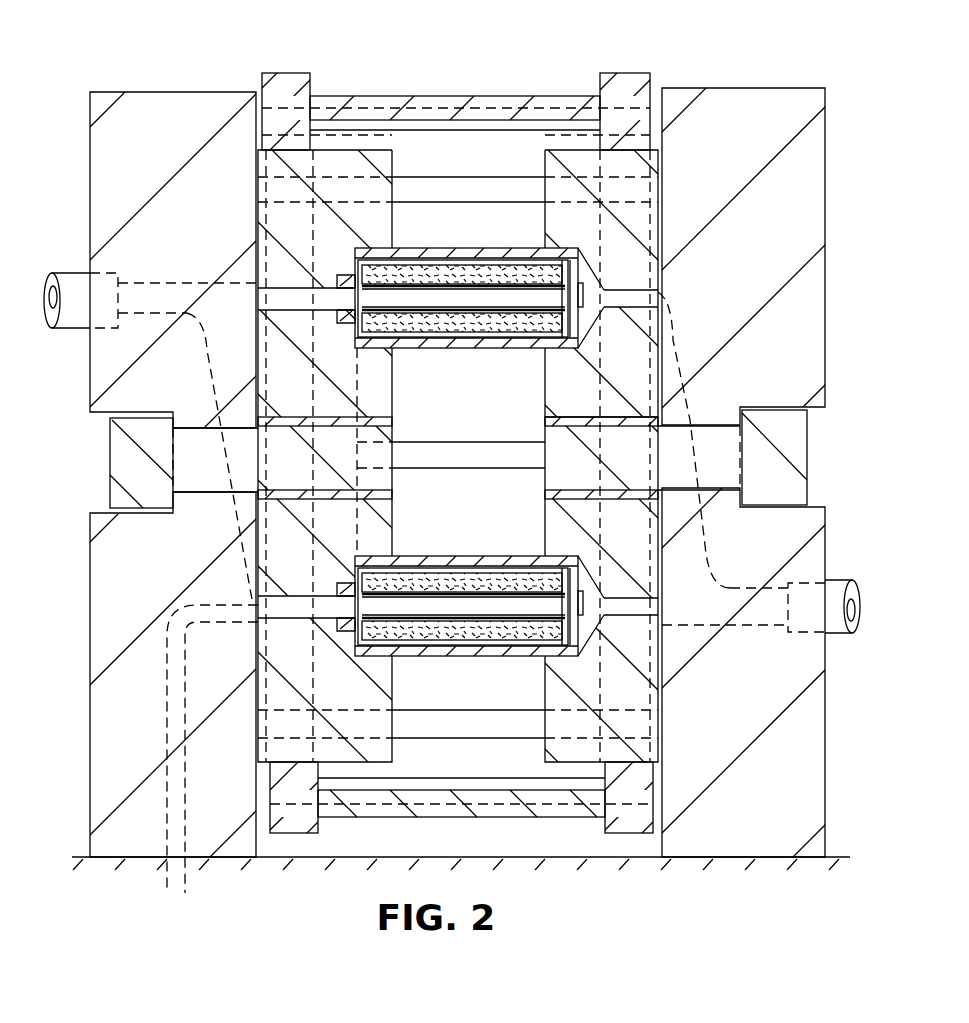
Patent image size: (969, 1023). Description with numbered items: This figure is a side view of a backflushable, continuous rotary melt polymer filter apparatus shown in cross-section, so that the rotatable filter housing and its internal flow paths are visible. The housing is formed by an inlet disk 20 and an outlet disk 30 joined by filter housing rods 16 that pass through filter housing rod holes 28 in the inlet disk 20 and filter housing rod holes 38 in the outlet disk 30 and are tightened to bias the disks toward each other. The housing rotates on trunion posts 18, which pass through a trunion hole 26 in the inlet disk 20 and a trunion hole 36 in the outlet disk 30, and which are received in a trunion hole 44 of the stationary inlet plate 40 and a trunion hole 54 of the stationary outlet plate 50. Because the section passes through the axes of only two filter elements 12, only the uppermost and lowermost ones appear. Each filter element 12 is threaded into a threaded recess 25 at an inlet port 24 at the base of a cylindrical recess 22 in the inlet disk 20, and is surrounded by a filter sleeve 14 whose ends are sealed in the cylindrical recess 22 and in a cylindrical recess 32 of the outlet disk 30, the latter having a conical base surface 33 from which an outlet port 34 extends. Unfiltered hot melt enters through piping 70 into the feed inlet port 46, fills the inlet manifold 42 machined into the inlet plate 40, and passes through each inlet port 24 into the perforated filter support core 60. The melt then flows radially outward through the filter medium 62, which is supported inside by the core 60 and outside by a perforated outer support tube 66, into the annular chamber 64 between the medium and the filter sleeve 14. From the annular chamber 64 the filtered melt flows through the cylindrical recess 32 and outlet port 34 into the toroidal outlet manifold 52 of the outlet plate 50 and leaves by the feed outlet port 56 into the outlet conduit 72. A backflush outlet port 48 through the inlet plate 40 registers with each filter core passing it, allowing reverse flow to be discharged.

The filter element 12 is at (469, 339).
The filter sleeve 14 is at (512, 257).
The filter housing rod 16 is at (483, 102).
The trunion post 18 is at (118, 470).
The inlet disk 20 is at (275, 167).
The cylindrical recess 22 is at (367, 249).
The inlet port 24 is at (284, 300).
The threaded recess 25 is at (345, 286).
The trunion hole 26 is at (95, 440).
The filter housing rod hole 28 is at (310, 96).
The outlet disk 30 is at (648, 160).
The cylindrical recess 32 is at (545, 250).
The conical base surface 33 is at (597, 282).
The outlet port 34 is at (632, 309).
The trunion hole 36 is at (607, 416).
The filter housing rod hole 38 is at (593, 93).
The inlet plate 40 is at (153, 110).
The inlet manifold 42 is at (237, 517).
The trunion hole 44 is at (195, 442).
The feed inlet port 46 is at (147, 296).
The backflush outlet port 48 is at (222, 612).
The outlet plate 50 is at (737, 98).
The outlet manifold 52 is at (668, 375).
The trunion hole 54 is at (690, 426).
The feed outlet port 56 is at (765, 613).
The filter support core 60 is at (470, 292).
The filter medium 62 is at (470, 268).
The annular chamber 64 is at (428, 268).
The perforated outer support tube 66 is at (490, 337).
The piping 70 is at (85, 272).
The outlet conduit 72 is at (842, 581).